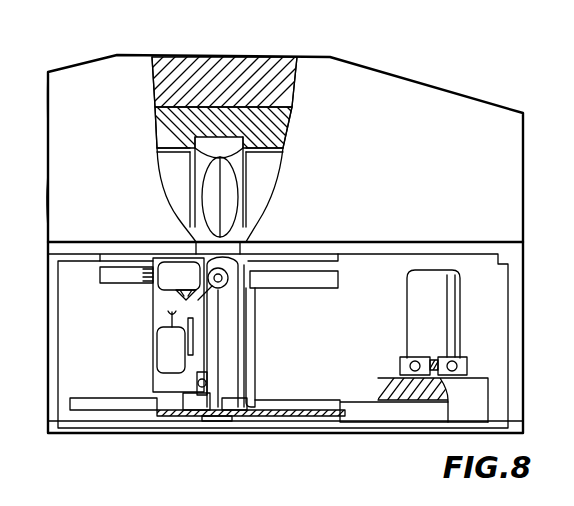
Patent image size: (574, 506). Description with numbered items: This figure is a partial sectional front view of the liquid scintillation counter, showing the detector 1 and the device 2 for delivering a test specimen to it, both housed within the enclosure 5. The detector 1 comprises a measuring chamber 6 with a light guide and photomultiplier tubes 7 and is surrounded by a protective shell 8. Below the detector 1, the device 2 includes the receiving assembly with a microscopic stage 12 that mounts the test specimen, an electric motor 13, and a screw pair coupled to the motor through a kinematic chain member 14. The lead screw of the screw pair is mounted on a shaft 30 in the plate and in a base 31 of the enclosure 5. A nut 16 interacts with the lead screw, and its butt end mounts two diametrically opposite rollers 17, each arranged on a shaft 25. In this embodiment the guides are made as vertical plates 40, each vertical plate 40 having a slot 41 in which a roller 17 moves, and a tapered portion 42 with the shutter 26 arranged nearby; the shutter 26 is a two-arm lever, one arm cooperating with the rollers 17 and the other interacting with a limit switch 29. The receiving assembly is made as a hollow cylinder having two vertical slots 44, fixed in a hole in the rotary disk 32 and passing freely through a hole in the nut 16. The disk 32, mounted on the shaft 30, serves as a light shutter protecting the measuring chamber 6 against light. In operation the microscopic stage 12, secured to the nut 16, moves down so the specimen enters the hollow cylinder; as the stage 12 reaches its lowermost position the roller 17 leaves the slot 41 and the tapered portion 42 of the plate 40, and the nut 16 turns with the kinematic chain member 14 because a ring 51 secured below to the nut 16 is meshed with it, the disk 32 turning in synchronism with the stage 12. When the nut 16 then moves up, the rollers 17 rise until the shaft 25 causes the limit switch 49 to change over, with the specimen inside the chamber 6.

The detector 1 is at (240, 51).
The device for delivering a test specimen 2 is at (97, 383).
The enclosure 5 is at (523, 291).
The measuring chamber 6 is at (283, 120).
The photomultiplier tubes 7 is at (270, 160).
The protective shell 8 is at (297, 80).
The microscopic stage 12 is at (252, 233).
The electric motor 13 is at (462, 274).
The kinematic chain member 14 is at (372, 425).
The nut 16 is at (338, 279).
The rollers 17 is at (264, 250).
The shaft 25 is at (193, 247).
The shutter 26 is at (193, 410).
The limit switch 29 is at (163, 332).
The shaft 30 is at (220, 421).
The base 31 is at (412, 424).
The rotary disk 32 is at (118, 250).
The vertical plate 40 is at (163, 304).
The slot 41 is at (246, 352).
The tapered portion 42 is at (236, 412).
The vertical slots 44 is at (246, 318).
The limit switch 49 is at (155, 288).
The ring 51 is at (256, 290).